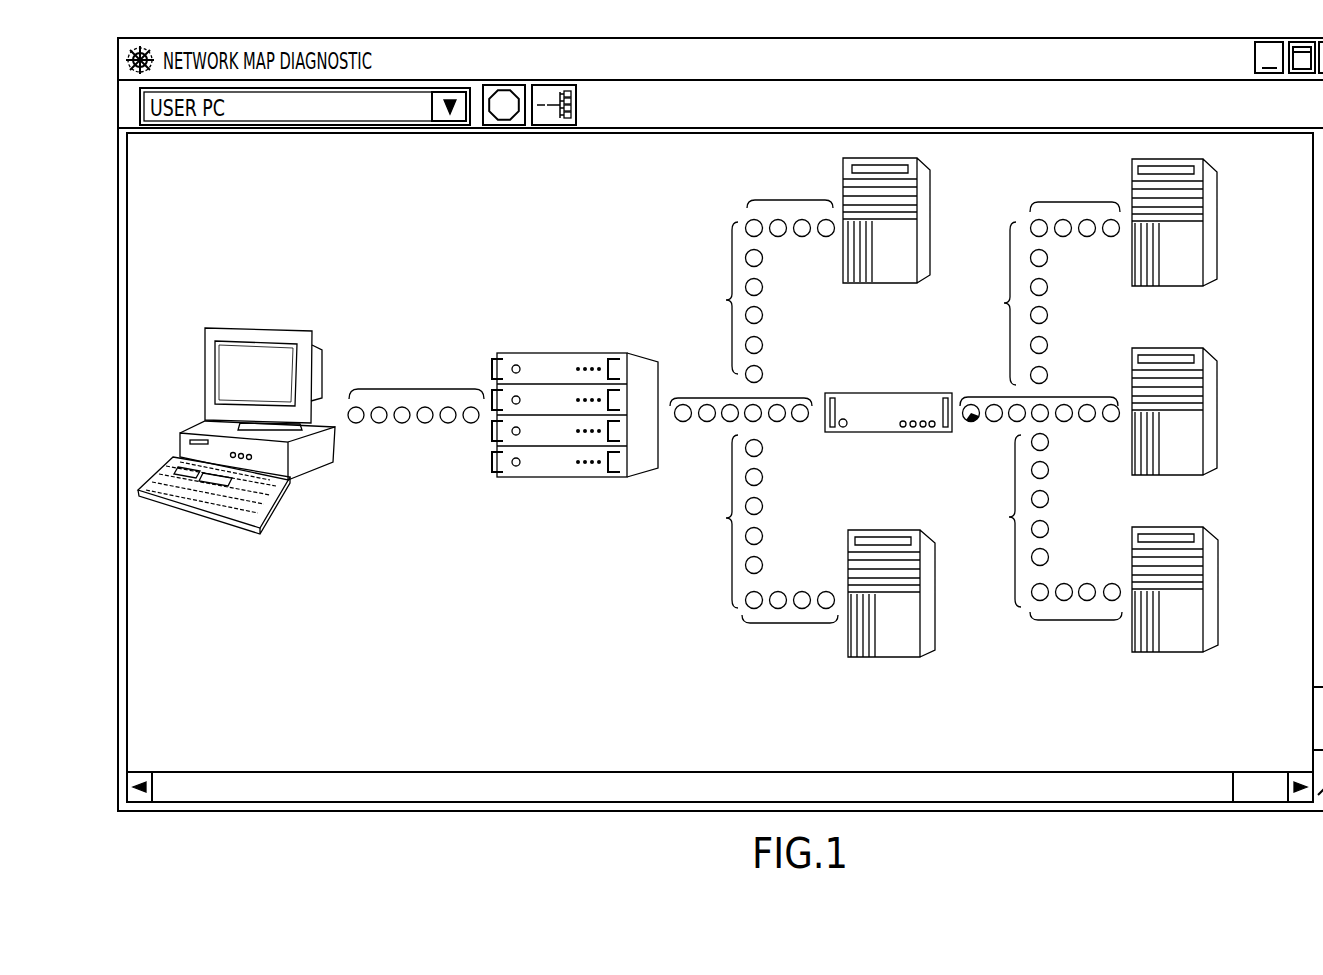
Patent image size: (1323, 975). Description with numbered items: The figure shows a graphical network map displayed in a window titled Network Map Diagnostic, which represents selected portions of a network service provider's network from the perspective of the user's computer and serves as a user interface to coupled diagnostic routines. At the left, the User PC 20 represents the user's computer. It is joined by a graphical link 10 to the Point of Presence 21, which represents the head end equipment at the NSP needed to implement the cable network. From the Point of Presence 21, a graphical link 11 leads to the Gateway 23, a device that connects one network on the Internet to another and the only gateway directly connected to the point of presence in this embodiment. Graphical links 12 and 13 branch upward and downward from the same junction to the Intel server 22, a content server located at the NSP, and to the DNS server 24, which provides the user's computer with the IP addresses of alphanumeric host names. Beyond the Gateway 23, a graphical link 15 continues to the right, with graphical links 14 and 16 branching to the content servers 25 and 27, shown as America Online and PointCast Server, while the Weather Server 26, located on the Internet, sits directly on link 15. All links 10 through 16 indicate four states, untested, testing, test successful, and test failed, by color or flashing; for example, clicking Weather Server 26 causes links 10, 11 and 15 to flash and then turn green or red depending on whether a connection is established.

The graphical link 10 is at (416, 388).
The graphical link 11 is at (712, 398).
The graphical link 12 is at (790, 200).
The graphical link 13 is at (726, 518).
The graphical link 14 is at (1073, 202).
The graphical link 15 is at (995, 397).
The graphical link 16 is at (1009, 517).
The User PC 20 is at (275, 328).
The Point of Presence 21 is at (558, 353).
The Intel server 22 is at (930, 232).
The Gateway 23 is at (845, 393).
The DNS server 24 is at (935, 597).
The content server 25 is at (1217, 230).
The Weather Server 26 is at (1217, 414).
The content server 27 is at (1218, 598).